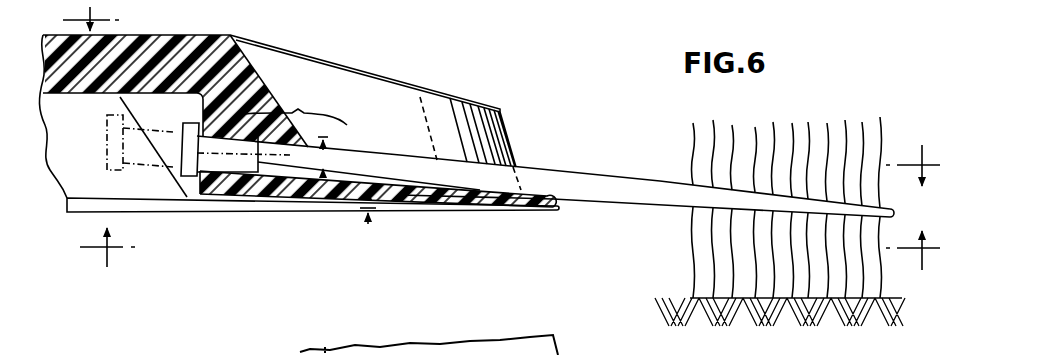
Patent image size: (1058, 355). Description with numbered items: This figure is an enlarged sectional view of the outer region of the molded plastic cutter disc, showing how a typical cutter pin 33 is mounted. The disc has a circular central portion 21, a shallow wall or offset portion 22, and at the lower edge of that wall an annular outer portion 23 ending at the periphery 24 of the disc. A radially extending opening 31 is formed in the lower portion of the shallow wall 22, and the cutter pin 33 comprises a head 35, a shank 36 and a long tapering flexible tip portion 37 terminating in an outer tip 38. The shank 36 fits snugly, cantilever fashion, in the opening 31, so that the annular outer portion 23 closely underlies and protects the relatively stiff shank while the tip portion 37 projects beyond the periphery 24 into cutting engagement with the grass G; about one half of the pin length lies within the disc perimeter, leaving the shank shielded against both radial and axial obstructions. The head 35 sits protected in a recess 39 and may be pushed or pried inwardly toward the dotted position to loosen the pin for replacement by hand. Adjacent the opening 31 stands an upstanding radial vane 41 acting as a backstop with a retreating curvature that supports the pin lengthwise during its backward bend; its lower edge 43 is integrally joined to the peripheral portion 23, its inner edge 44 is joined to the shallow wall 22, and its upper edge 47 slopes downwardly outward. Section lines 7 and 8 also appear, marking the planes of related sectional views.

The circular central portion 21 is at (172, 34).
The shallow wall or offset portion 22 is at (262, 96).
The annular outer portion 23 is at (378, 219).
The periphery of the disc 24 is at (557, 207).
The radial opening 31 is at (245, 171).
The cutter pin 33 is at (567, 186).
The head 35 is at (187, 163).
The shank 36 is at (290, 107).
The tapering flexible tip portion 37 is at (623, 198).
The outer tip 38 is at (893, 212).
The recess 39 is at (143, 103).
The upstanding radial vane 41 is at (415, 80).
The lower edge of the vane 43 is at (468, 199).
The inner edge of the vane 44 is at (251, 67).
The upper edge of the vane 47 is at (458, 102).
The grass G is at (692, 258).
The section line 7- 7 is at (510, 262).
The section line 8- 8 is at (491, 96).